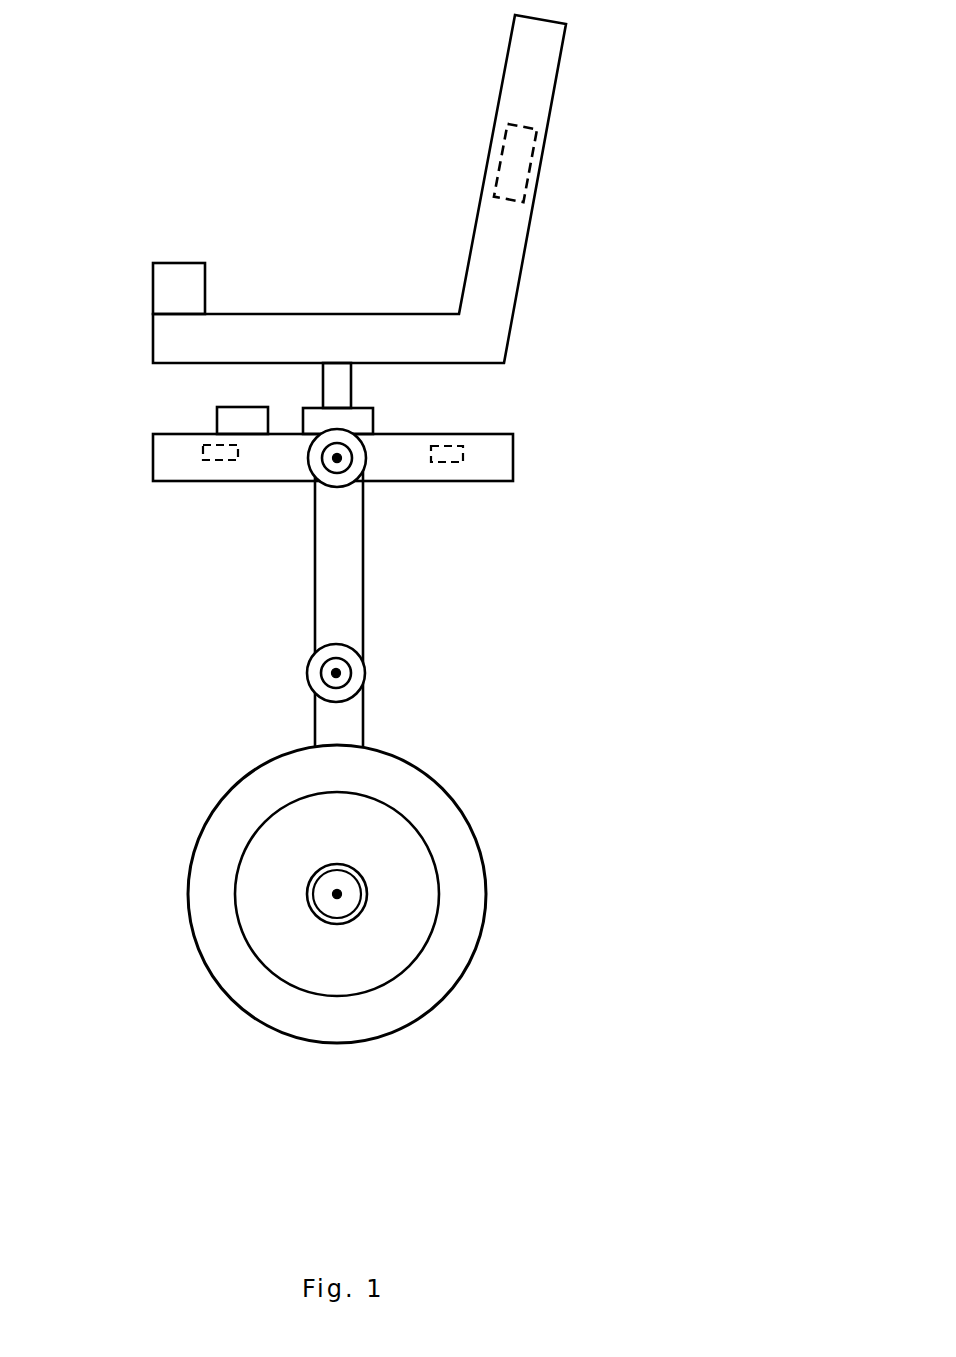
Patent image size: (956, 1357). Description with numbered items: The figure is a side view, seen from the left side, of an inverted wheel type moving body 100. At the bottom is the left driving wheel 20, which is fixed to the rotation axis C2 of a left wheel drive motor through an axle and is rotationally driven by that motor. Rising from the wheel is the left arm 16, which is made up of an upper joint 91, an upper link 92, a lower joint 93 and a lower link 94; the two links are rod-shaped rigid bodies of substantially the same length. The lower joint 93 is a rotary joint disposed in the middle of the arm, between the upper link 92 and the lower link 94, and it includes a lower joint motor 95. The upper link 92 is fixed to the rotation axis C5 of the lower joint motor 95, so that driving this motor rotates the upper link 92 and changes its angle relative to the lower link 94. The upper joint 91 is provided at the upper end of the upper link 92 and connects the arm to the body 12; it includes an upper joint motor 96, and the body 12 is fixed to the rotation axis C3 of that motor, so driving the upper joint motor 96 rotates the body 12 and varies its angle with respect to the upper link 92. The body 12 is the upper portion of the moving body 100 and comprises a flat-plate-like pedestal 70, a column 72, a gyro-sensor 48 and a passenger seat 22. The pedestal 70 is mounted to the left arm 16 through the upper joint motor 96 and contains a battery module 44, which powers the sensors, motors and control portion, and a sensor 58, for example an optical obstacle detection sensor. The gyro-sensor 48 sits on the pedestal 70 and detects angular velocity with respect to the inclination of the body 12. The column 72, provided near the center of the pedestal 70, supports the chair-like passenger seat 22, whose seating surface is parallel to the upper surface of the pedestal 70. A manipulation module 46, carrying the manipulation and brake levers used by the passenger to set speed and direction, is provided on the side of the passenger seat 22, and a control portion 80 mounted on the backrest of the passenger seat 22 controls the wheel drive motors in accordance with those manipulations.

The moving body 100 is at (79, 127).
The body 12 is at (590, 296).
The passenger seat 22 is at (532, 217).
The control portion 80 is at (532, 145).
The manipulation module 46 is at (180, 263).
The column 72 is at (340, 385).
The battery module 44 is at (465, 452).
The gyro-sensor 48 is at (225, 417).
The sensor 58 is at (202, 452).
The pedestal 70 is at (480, 435).
The upper joint 91 is at (285, 520).
The upper link 92 is at (358, 533).
The lower link 94 is at (362, 723).
The upper joint motor 96 is at (365, 465).
The rotation axis of the upper joint motor C3 is at (330, 463).
The lower joint 93 is at (460, 670).
The lower joint motor 95 is at (365, 670).
The rotation axis of the lower joint motor C5 is at (327, 678).
The left arm 16 is at (535, 594).
The left driving wheel 20 is at (483, 887).
The rotation axis of the left wheel drive motor C2 is at (337, 894).